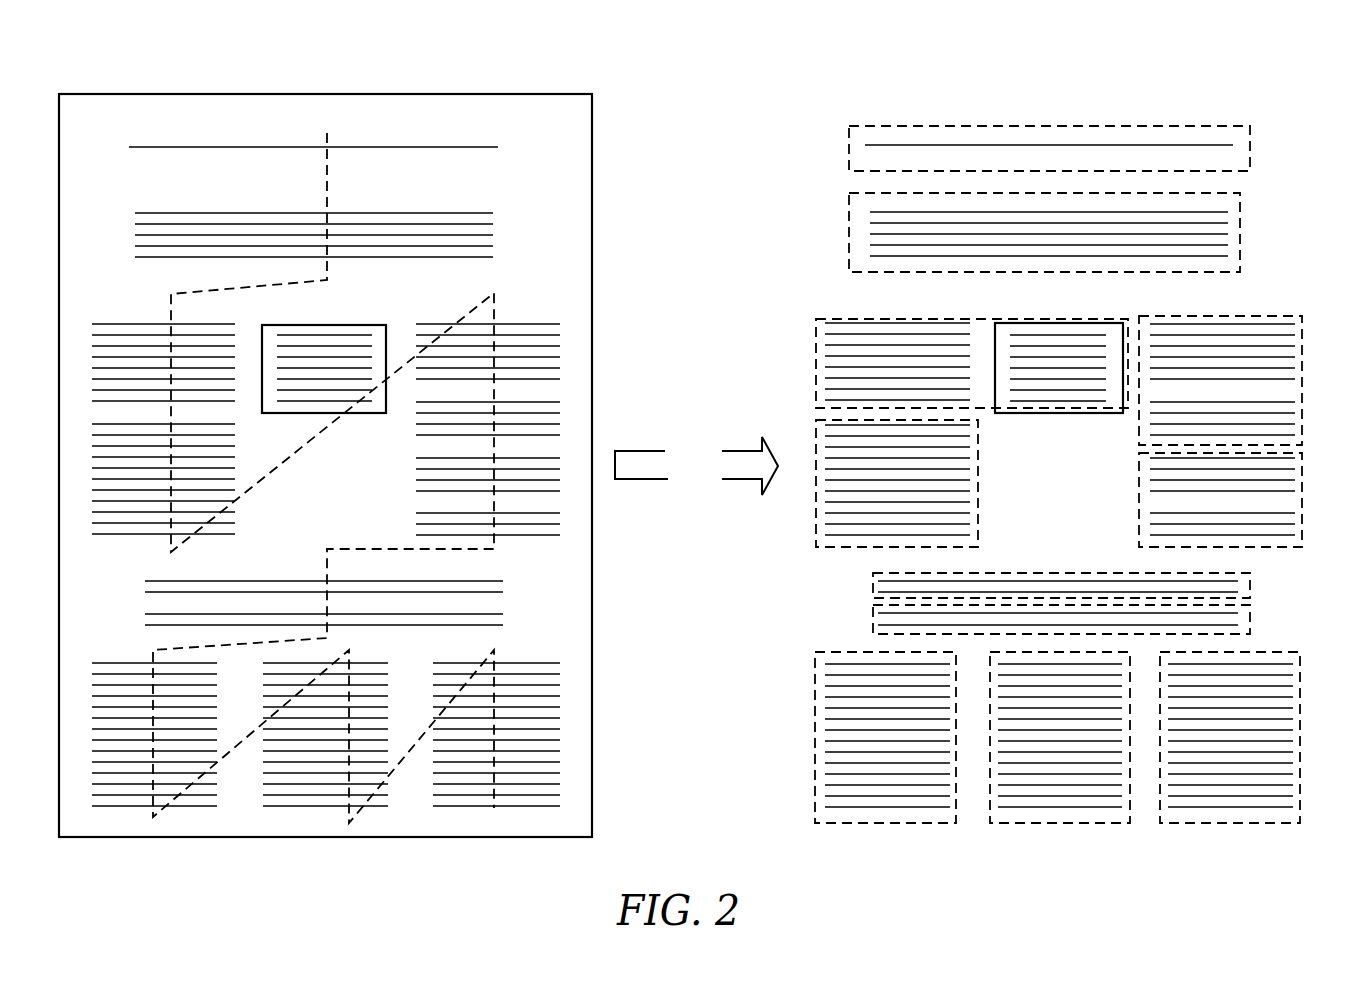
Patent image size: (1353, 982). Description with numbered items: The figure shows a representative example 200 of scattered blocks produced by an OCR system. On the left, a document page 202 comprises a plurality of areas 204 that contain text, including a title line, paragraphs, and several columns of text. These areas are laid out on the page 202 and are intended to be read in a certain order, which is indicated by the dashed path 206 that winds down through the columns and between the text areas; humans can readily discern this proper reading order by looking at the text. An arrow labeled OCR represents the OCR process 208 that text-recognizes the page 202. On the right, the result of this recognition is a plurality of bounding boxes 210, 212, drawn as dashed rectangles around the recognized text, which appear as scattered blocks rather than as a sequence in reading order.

The representative example 200 is at (1285, 78).
The document page 202 is at (517, 92).
The areas 204 is at (490, 213).
The dashed path 206 is at (327, 133).
The OCR process 208 is at (657, 448).
The bounding boxes 210 is at (1240, 215).
The bounding boxes 212 is at (816, 349).